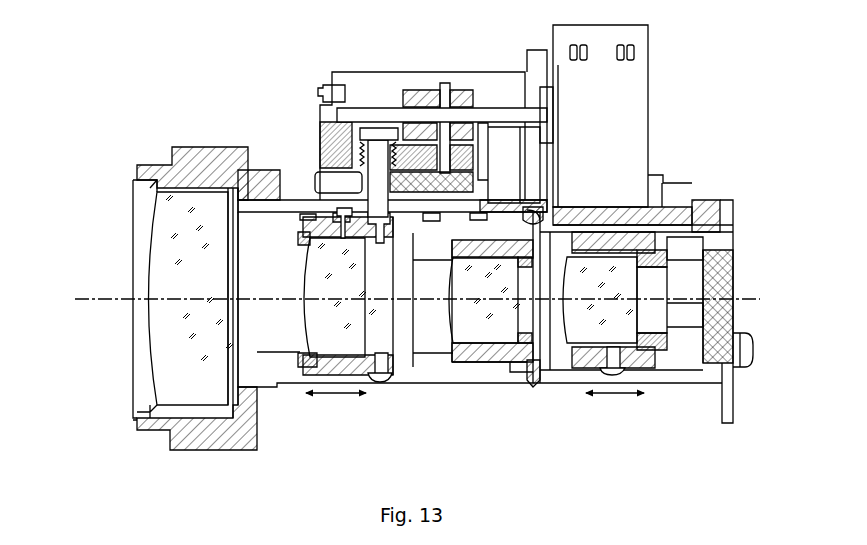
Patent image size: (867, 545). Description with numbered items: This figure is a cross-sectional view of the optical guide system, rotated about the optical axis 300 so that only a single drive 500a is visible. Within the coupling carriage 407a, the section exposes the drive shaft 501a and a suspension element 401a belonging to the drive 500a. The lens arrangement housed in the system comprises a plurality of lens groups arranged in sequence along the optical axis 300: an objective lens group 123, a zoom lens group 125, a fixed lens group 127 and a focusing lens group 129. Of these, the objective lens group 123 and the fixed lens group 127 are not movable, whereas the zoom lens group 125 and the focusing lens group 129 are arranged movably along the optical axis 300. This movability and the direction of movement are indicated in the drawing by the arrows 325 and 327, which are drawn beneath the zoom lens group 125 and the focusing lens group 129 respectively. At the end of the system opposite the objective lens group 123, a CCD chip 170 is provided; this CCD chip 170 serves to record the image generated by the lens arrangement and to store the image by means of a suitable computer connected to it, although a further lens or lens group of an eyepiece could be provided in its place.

The objective lens group 123 is at (182, 447).
The zoom lens group 125 is at (372, 419).
The fixed lens group 127 is at (497, 376).
The focusing lens group 129 is at (647, 413).
The optical axis 300 is at (78, 300).
The arrow 325 is at (340, 397).
The arrow 327 is at (608, 396).
The CCD chip 170 is at (731, 331).
The suspension element 401a is at (378, 150).
The coupling carriage 407a is at (362, 86).
The drive shaft 501a is at (462, 108).
The drive 500a is at (637, 98).